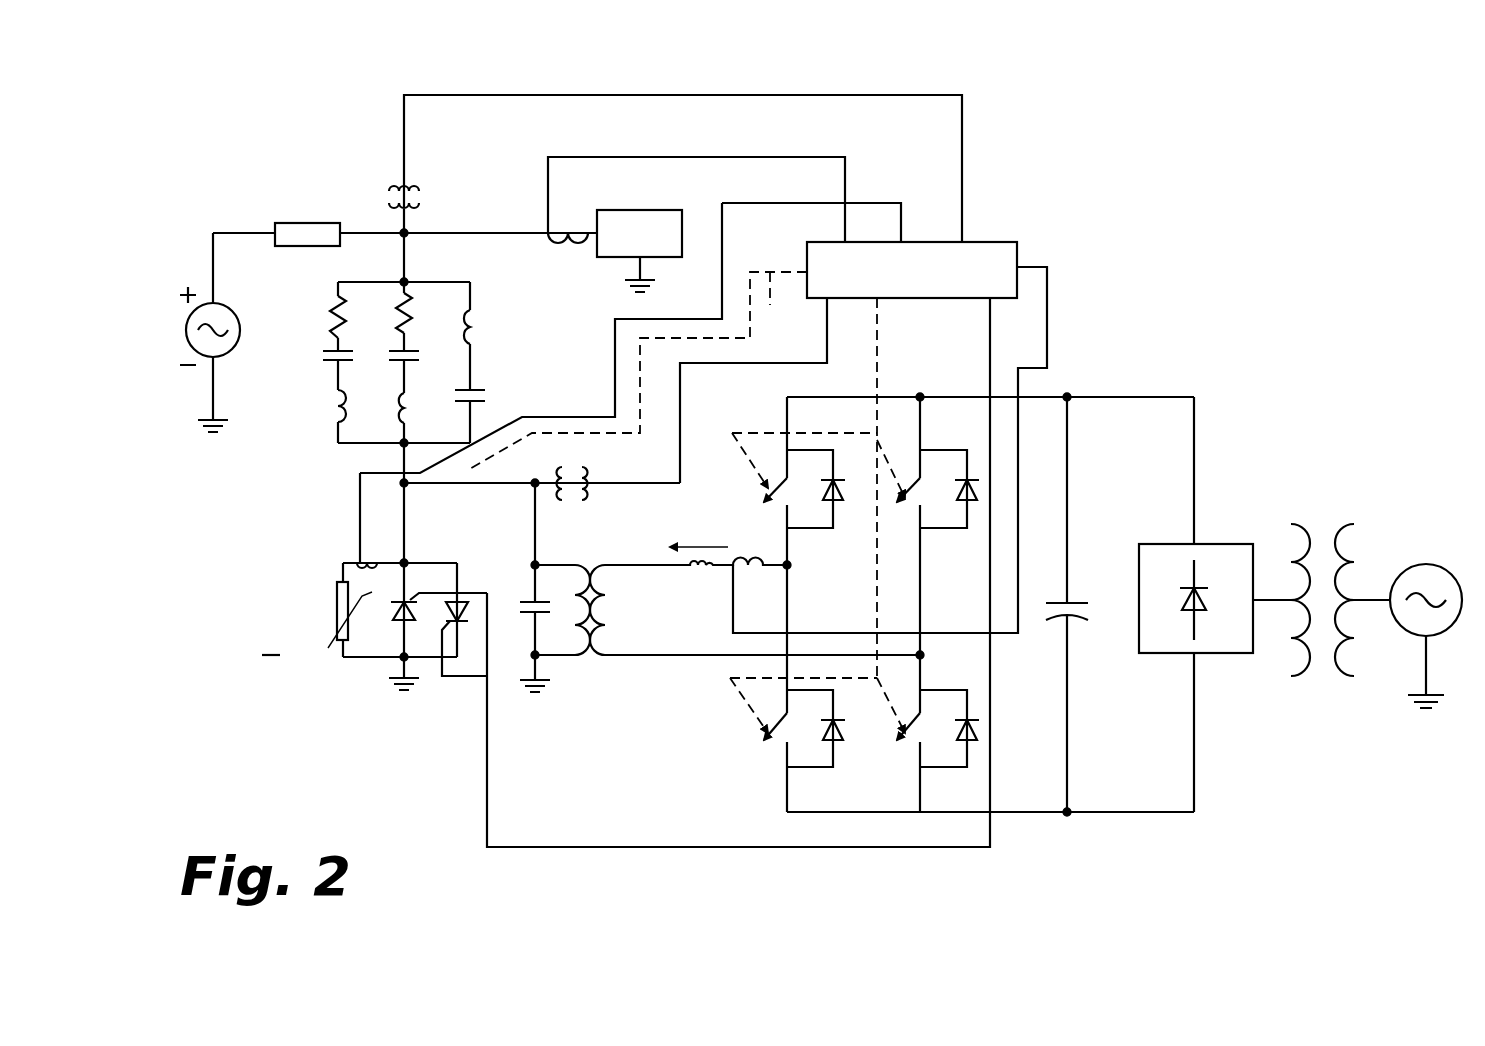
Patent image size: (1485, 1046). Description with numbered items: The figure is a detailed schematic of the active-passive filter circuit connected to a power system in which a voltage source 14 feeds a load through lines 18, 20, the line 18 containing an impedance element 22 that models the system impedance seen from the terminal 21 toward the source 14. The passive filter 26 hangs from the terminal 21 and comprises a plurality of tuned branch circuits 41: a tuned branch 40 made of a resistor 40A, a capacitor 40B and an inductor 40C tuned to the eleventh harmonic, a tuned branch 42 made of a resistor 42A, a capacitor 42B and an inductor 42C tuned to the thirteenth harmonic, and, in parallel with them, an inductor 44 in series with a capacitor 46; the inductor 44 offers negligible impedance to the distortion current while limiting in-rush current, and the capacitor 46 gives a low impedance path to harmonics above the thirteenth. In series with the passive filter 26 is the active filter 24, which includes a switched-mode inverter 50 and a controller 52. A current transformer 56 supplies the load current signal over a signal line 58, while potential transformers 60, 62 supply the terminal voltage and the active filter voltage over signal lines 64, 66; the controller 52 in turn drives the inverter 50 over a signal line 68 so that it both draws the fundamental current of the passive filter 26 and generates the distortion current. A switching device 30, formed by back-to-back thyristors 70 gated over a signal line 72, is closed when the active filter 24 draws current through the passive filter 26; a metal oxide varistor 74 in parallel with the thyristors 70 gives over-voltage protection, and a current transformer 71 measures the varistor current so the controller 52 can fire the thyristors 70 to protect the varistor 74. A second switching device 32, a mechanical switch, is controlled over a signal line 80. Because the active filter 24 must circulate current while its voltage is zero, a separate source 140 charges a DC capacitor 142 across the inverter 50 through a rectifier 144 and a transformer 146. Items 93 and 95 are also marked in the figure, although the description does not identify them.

The voltage source 14 is at (226, 304).
The line 18 is at (358, 230).
The line 20 is at (458, 232).
The terminal 21 is at (398, 225).
The impedance element 22 is at (280, 226).
The active filter 24 is at (1130, 255).
The passive filter 26 is at (522, 328).
The switching device 30 is at (240, 604).
The second switching device 32 is at (447, 486).
The tuned branch 40 is at (284, 388).
The resistor 40A is at (330, 313).
The capacitor 40B is at (330, 352).
The inductor 40C is at (330, 405).
The tuned branch circuits 41 is at (360, 460).
The tuned branch 42 is at (443, 342).
The resistor 42A is at (434, 312).
The capacitor 42B is at (416, 353).
The inductor 42C is at (412, 405).
The inductor 44 is at (480, 312).
The capacitor 46 is at (478, 392).
The switched-mode inverter 50 is at (898, 378).
The controller 52 is at (980, 241).
The current transformer 56 is at (566, 230).
The signal line 58 is at (704, 157).
The potential transformer 60 is at (416, 193).
The potential transformer 62 is at (585, 492).
The signal line 64 is at (636, 93).
The signal line 66 is at (745, 366).
The signal line 68 is at (876, 552).
The thyristors 70 is at (386, 638).
The current transformer 71 is at (368, 560).
The signal line 72 is at (608, 845).
The metal oxide varistor 74 is at (336, 645).
The signal line 80 is at (772, 300).
The DC link sensing line 93 is at (1048, 338).
The injection transformer and inductor 95 is at (755, 558).
The source 140 is at (1410, 566).
The DC capacitor 142 is at (1068, 552).
The rectifier 144 is at (1200, 542).
The auxiliary transformer 146 is at (1320, 508).